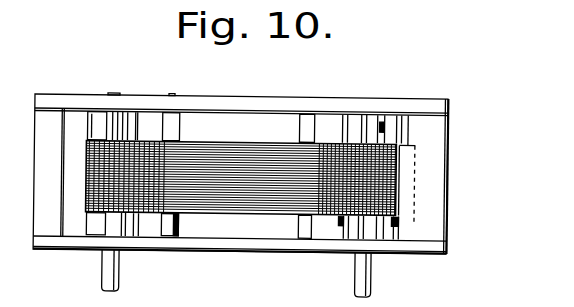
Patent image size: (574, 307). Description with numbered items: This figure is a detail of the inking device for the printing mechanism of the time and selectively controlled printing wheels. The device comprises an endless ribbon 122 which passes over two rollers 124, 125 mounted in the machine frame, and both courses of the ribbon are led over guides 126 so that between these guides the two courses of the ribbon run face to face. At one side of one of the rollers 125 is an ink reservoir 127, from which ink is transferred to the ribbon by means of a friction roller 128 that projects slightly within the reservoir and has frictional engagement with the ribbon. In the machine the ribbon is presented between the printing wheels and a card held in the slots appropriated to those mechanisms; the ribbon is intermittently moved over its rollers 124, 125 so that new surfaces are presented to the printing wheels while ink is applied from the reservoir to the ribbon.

The endless ribbon 122 is at (249, 148).
The roller 124 is at (101, 118).
The roller 125 is at (382, 128).
The guides 126 is at (180, 233).
The ink reservoir 127 is at (432, 177).
The friction roller 128 is at (400, 207).